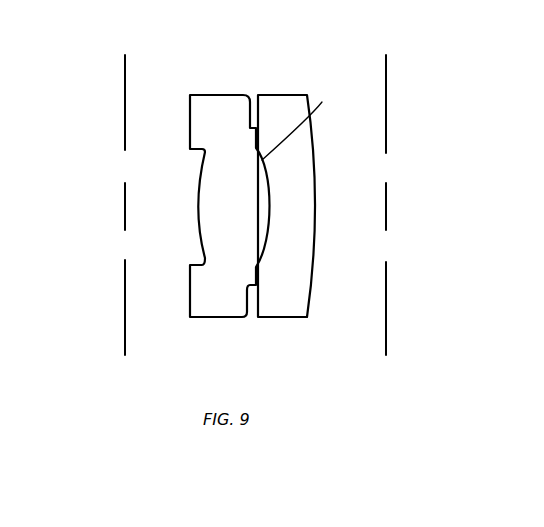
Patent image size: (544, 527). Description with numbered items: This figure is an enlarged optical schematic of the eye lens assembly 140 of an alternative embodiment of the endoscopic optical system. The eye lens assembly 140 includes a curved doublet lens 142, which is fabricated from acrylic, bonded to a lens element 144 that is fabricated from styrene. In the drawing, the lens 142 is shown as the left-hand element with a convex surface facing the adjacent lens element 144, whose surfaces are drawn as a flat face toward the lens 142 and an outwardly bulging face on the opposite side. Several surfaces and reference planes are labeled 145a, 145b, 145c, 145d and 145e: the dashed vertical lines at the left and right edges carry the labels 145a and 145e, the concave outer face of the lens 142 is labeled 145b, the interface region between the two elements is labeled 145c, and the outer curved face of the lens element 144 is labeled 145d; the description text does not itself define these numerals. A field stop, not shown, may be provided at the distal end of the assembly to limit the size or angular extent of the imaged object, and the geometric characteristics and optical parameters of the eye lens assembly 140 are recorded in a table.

The eye lens assembly 140 is at (257, 77).
The curved doublet lens 142 is at (247, 212).
The lens element 144 is at (283, 293).
The first reference plane 145a is at (125, 112).
The second reference surface 145b is at (200, 232).
The third reference surface 145c is at (308, 121).
The fourth reference surface 145d is at (313, 275).
The fifth reference plane 145e is at (386, 197).